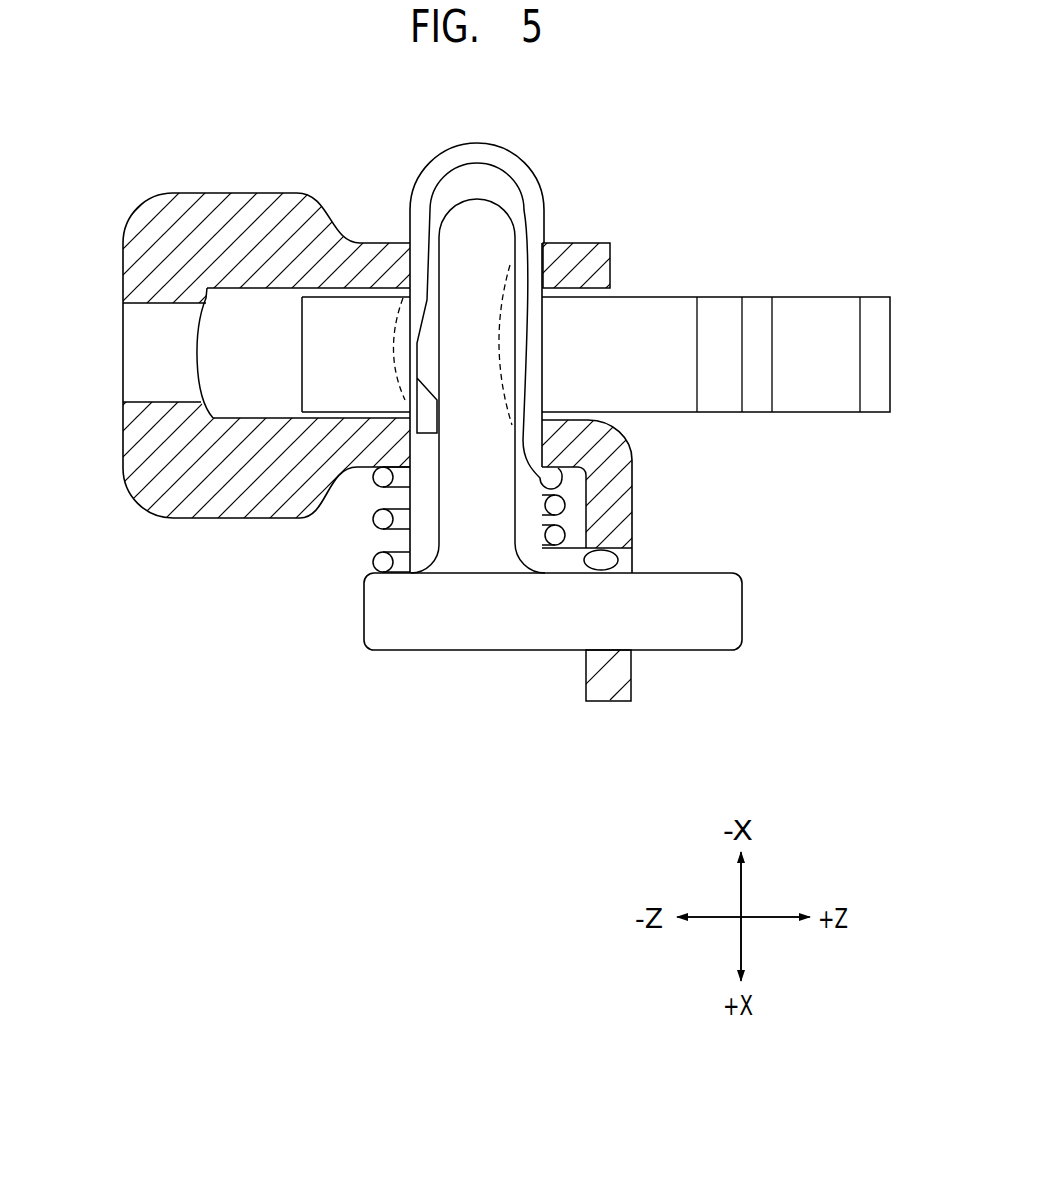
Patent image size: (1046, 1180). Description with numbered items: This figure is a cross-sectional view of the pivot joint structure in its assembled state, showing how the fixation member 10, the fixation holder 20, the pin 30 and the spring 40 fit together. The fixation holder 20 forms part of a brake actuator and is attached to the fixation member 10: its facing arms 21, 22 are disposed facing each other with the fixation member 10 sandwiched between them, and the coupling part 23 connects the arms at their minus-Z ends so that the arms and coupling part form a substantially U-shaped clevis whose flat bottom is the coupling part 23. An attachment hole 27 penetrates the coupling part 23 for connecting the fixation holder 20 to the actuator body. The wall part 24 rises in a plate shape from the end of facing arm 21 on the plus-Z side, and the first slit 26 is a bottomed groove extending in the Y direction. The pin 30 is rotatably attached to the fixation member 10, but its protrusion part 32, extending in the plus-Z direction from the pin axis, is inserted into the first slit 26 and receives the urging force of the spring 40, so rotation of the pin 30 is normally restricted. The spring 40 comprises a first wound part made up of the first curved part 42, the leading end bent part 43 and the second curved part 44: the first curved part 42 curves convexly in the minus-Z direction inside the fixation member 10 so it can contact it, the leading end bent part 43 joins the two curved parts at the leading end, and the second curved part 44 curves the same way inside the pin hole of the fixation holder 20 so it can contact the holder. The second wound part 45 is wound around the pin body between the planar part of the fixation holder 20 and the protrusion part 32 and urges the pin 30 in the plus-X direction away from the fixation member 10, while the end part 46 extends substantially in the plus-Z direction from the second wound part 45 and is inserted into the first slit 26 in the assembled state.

The fixation member 10 is at (880, 335).
The fixation holder 20 is at (226, 357).
The facing arm 21 is at (226, 500).
The facing arm 22 is at (232, 203).
The coupling part 23 is at (137, 252).
The wall part 24 is at (608, 692).
The first slit 26 is at (658, 557).
The attachment hole 27 is at (137, 330).
The pin 30 is at (598, 653).
The protrusion part 32 is at (723, 598).
The spring 40 is at (510, 315).
The leading end bent part 43 is at (478, 145).
The first curved part 42 is at (393, 353).
The second curved part 44 is at (515, 356).
The second wound part 45 is at (378, 524).
The end part 46 is at (604, 554).